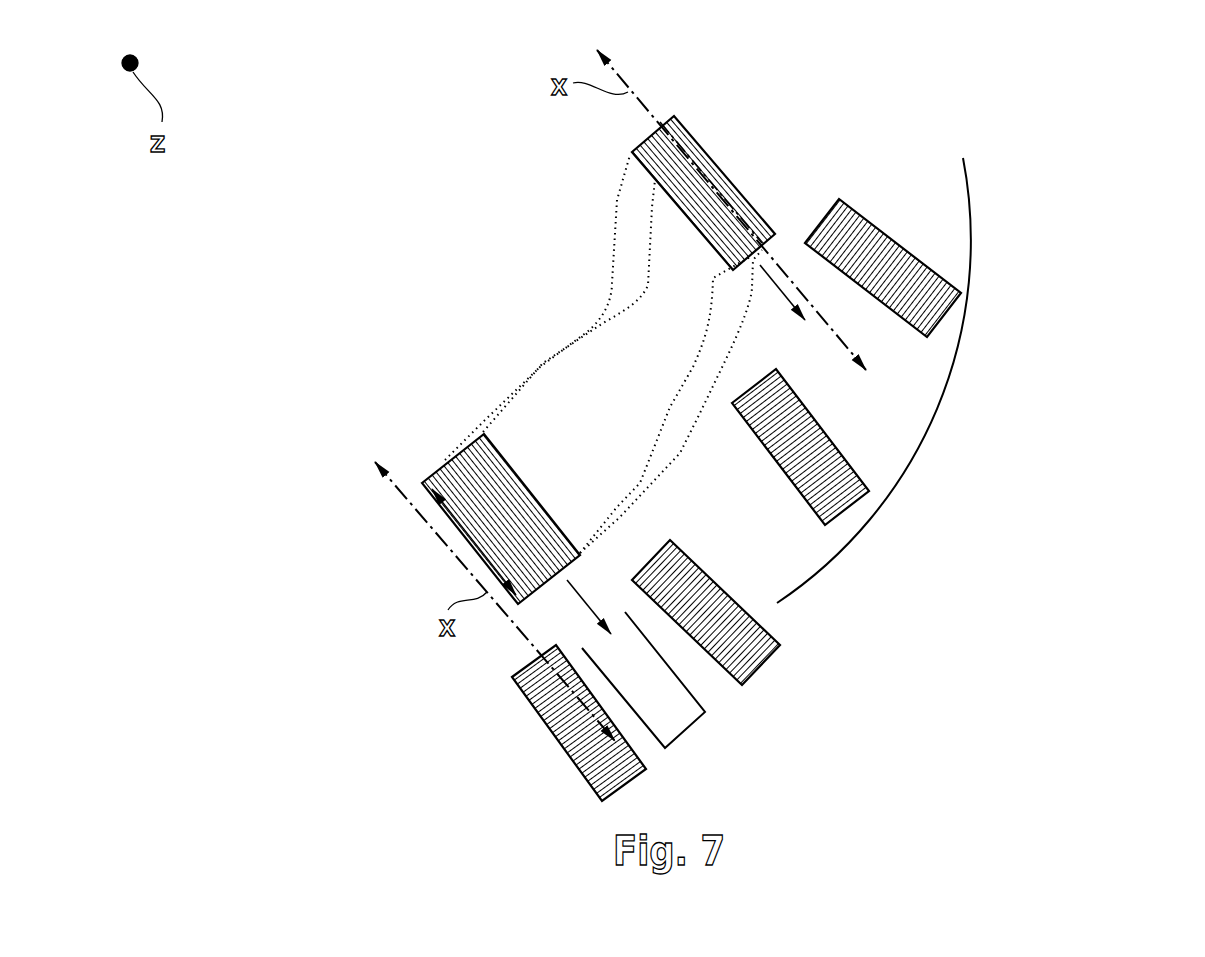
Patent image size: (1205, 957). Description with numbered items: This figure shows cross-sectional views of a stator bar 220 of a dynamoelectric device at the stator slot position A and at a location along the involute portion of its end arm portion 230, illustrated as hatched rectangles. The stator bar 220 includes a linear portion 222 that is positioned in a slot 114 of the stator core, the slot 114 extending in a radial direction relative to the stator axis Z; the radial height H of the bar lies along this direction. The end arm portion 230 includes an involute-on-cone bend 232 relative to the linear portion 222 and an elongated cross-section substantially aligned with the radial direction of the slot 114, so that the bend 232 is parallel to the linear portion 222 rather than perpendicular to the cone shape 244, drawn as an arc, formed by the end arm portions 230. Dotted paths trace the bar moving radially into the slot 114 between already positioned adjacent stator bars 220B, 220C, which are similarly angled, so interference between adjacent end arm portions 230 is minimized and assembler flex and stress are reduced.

The slot 114 is at (688, 728).
The stator bar 220 is at (460, 290).
The adjacent stator bar 220B is at (847, 493).
The adjacent stator bar 220C is at (826, 217).
The linear portion 222 is at (467, 475).
The end arm portion 230 is at (581, 315).
The involute-on-cone bend 232 is at (660, 178).
The cone shape 244 is at (962, 345).